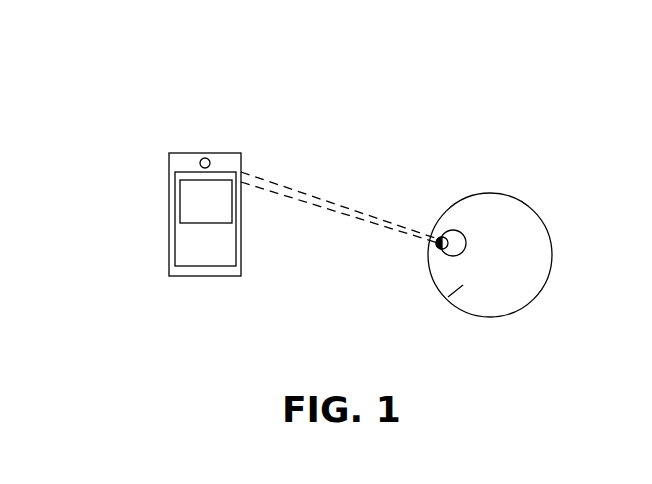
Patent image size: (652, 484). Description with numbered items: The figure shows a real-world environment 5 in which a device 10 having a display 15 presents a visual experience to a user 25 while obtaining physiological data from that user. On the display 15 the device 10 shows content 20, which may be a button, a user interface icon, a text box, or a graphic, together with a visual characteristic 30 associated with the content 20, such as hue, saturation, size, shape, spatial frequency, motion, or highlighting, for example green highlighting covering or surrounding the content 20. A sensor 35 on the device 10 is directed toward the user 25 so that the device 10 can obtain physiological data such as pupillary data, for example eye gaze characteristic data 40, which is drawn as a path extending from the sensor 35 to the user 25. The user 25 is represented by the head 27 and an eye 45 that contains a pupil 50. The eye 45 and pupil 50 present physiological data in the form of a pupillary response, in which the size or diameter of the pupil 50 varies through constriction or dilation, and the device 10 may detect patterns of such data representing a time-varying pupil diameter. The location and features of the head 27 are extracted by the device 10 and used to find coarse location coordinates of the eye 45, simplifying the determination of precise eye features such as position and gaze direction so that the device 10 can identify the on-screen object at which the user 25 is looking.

The real-world environment 5 is at (112, 89).
The device 10 is at (212, 276).
The display 15 is at (205, 248).
The content 20 is at (236, 212).
The user 25 is at (552, 242).
The head 27 is at (503, 193).
The visual characteristic 30 is at (206, 201).
The sensor 35 is at (205, 158).
The eye gaze characteristic data 40 is at (337, 213).
The eye 45 is at (467, 243).
The pupil 50 is at (440, 240).